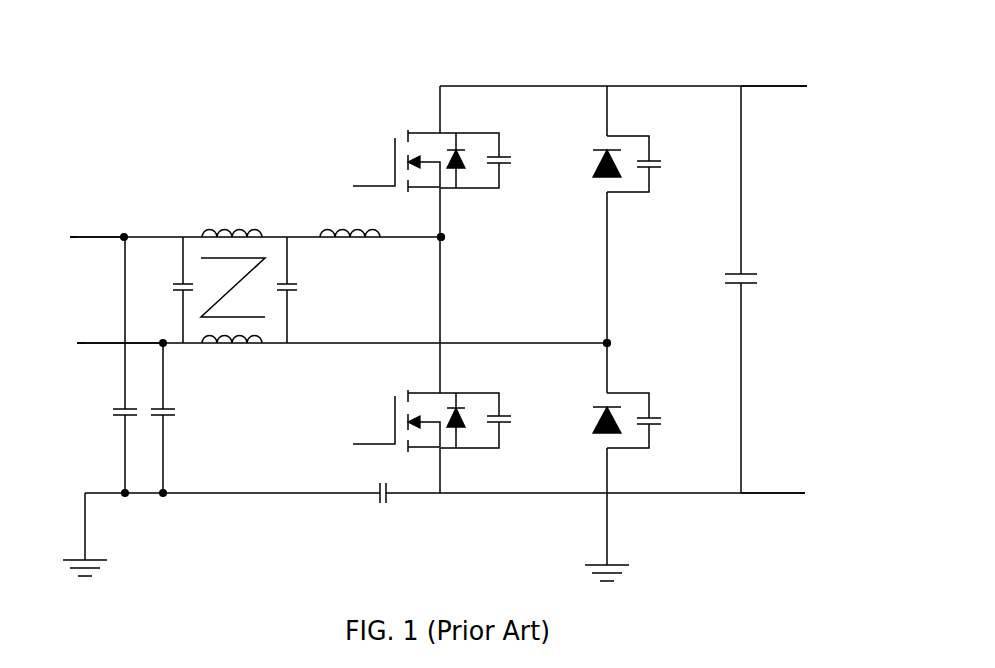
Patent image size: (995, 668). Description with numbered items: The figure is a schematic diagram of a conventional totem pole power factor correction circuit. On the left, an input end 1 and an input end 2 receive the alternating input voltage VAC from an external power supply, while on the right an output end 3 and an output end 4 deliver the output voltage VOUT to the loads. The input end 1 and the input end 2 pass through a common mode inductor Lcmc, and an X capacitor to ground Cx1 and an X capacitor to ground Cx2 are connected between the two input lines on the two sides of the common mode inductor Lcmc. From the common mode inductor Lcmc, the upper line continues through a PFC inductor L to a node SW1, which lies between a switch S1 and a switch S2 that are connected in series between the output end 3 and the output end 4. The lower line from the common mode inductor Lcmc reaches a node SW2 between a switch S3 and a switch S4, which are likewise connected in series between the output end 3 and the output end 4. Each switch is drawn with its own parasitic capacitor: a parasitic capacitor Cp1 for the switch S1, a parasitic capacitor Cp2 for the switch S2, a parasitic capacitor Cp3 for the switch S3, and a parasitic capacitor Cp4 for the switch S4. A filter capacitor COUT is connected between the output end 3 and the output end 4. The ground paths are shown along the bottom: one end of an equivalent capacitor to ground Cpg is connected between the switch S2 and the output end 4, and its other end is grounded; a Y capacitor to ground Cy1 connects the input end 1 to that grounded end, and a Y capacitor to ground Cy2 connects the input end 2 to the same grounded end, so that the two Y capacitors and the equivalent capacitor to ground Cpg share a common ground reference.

The input end 1 is at (84, 237).
The input end 2 is at (103, 345).
The output end 3 is at (785, 89).
The output end 4 is at (785, 496).
The AC input voltage VAC is at (61, 290).
The DC output voltage VOUT is at (828, 289).
The common mode inductor Lcmc is at (233, 268).
The PFC inductor L is at (350, 250).
The X capacitor to ground Cx1 is at (162, 290).
The X capacitor to ground Cx2 is at (311, 290).
The Y capacitor to ground Cy1 is at (100, 365).
The Y capacitor to ground Cy2 is at (188, 418).
The equivalent capacitor to ground Cpg is at (385, 510).
The switch S1 is at (396, 161).
The switch S2 is at (394, 421).
The switch S3 is at (593, 163).
The switch S4 is at (590, 421).
The parasitic capacitor Cp1 is at (496, 165).
The parasitic capacitor Cp2 is at (496, 425).
The parasitic capacitor Cp3 is at (656, 171).
The parasitic capacitor Cp4 is at (656, 429).
The node SW1 is at (475, 252).
The node SW2 is at (639, 352).
The filter capacitor COUT is at (762, 289).